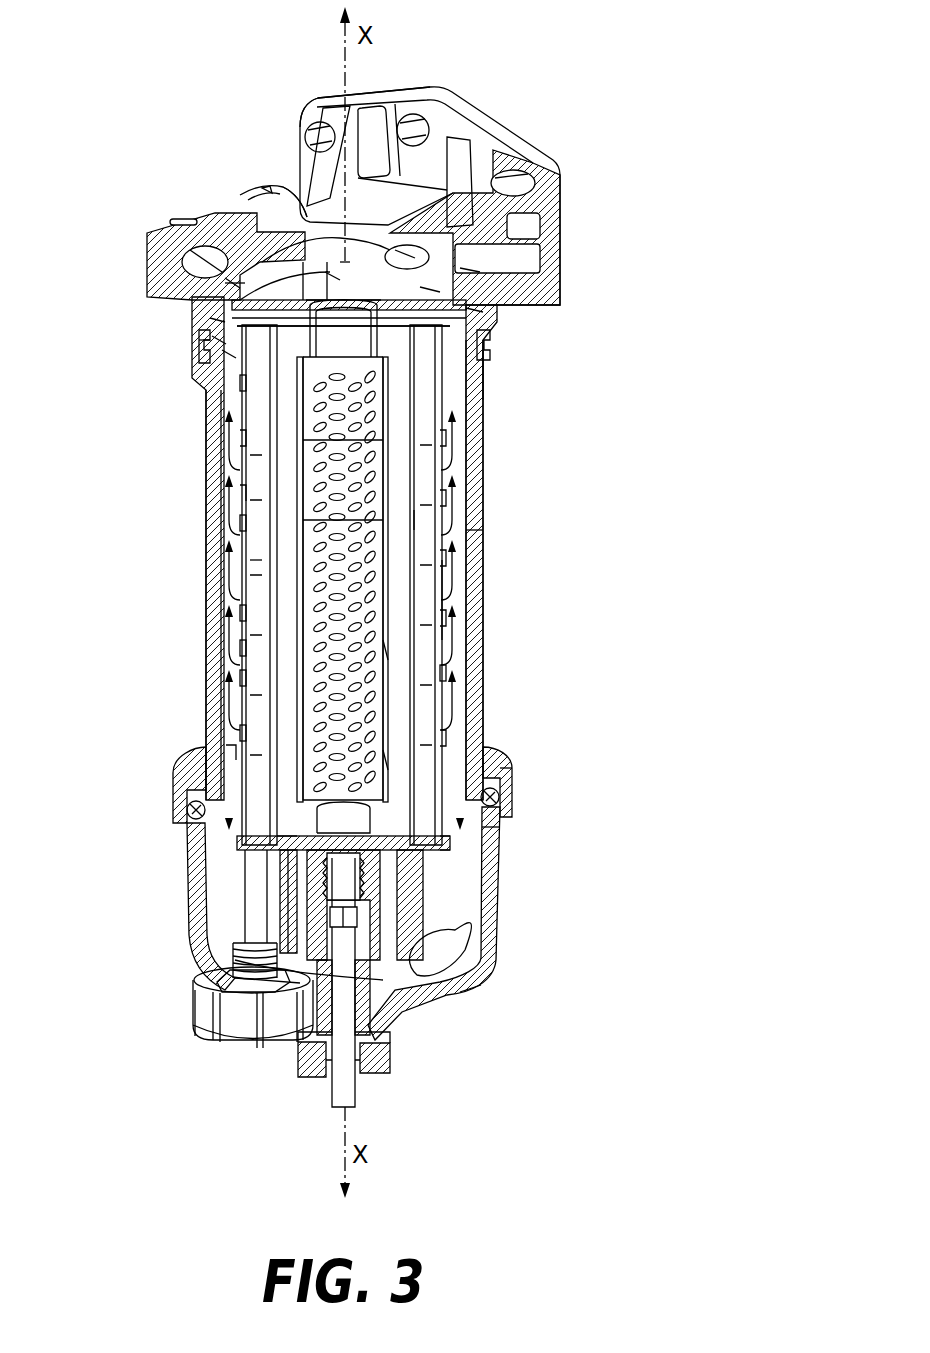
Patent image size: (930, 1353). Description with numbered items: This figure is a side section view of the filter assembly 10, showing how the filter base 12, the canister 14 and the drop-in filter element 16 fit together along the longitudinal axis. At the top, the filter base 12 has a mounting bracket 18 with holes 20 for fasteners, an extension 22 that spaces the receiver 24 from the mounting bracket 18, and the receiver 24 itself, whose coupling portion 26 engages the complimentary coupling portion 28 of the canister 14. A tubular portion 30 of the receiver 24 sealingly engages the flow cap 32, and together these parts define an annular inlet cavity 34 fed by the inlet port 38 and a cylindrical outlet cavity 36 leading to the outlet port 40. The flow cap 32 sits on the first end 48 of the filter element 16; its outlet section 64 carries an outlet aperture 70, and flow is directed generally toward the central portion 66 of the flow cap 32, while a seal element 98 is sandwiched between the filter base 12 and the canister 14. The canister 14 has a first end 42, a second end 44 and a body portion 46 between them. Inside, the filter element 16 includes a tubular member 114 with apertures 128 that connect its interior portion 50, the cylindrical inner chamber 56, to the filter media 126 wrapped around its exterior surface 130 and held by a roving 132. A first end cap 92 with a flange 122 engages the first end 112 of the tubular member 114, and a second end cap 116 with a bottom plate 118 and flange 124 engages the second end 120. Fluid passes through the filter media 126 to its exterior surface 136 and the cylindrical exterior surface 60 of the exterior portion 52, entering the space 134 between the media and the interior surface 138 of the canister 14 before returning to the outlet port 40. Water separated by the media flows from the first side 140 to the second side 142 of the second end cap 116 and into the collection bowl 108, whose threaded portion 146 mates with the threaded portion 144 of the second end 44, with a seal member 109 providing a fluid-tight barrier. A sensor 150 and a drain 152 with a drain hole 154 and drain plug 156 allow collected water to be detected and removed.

The filter assembly 10 is at (500, 52).
The filter base 12 is at (490, 122).
The canister 14 is at (483, 678).
The filter element 16 is at (455, 600).
The mounting bracket 18 is at (310, 98).
The hole 20 is at (305, 137).
The extension 22 is at (330, 200).
The receiver 24 is at (172, 326).
The coupling portion 26 is at (195, 347).
The coupling portion 28 is at (218, 340).
The tubular portion 30 is at (233, 283).
The flow cap 32 is at (475, 310).
The inlet cavity 34 is at (330, 275).
The outlet cavity 36 is at (292, 192).
The inlet port 38 is at (252, 188).
The outlet port 40 is at (410, 255).
The first end 42 is at (525, 352).
The second end 44 is at (508, 740).
The body portion 46 is at (481, 543).
The first end 48 is at (435, 350).
The interior portion 50 is at (345, 470).
The exterior portion 52 is at (417, 455).
The cylindrical inner chamber 56 is at (345, 520).
The cylindrical exterior surface 60 is at (418, 520).
The outlet section 64 is at (430, 290).
The central portion 66 is at (345, 262).
The outlet aperture 70 is at (470, 270).
The first end cap 92 is at (228, 353).
The seal element 98 is at (215, 320).
The collection bowl 108 is at (481, 985).
The seal member 109 is at (190, 806).
The first end 112 is at (343, 440).
The tubular member 114 is at (366, 650).
The second end cap 116 is at (450, 836).
The bottom plate 118 is at (450, 850).
The second end 120 is at (400, 757).
The flange 122 is at (310, 363).
The flange 124 is at (310, 830).
The filter media 126 is at (258, 500).
The apertures 128 is at (310, 520).
The exterior surface 130 is at (297, 567).
The roving 132 is at (230, 613).
The space 134 is at (220, 647).
The exterior surface 136 is at (237, 670).
The interior surface 138 is at (220, 733).
The first side 140 is at (222, 756).
The second side 142 is at (213, 871).
The threaded portion 144 is at (510, 773).
The threaded portion 146 is at (500, 833).
The sensor 150 is at (243, 917).
The drain 152 is at (272, 1060).
The drain hole 154 is at (350, 1040).
The drain plug 156 is at (387, 1067).